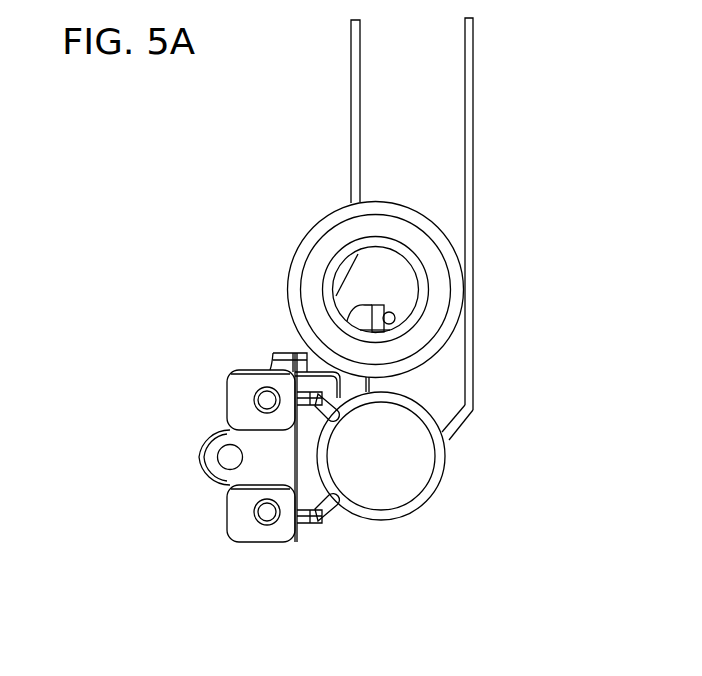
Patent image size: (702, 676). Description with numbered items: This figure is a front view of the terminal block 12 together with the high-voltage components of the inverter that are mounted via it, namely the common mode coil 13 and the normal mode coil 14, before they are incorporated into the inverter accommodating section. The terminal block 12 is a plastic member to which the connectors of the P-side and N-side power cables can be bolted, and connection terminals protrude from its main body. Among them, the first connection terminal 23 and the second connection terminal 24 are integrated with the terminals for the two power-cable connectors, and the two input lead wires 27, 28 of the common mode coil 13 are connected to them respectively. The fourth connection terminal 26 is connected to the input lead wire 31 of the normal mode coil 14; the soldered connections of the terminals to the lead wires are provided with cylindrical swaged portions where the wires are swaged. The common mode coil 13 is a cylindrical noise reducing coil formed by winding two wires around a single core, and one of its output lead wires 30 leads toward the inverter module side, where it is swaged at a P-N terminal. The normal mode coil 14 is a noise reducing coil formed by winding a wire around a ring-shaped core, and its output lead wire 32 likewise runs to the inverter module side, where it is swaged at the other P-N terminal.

The terminal block 12 is at (243, 528).
The common mode coil 13 is at (413, 466).
The normal mode coil 14 is at (323, 250).
The first connection terminal 23 is at (310, 385).
The second connection terminal 24 is at (317, 518).
The fourth connection terminal 26 is at (362, 318).
The input lead wire 27 is at (322, 428).
The input lead wire 28 is at (325, 502).
The output lead wire 30 is at (470, 75).
The input lead wire 31 is at (383, 325).
The output lead wire 32 is at (356, 73).